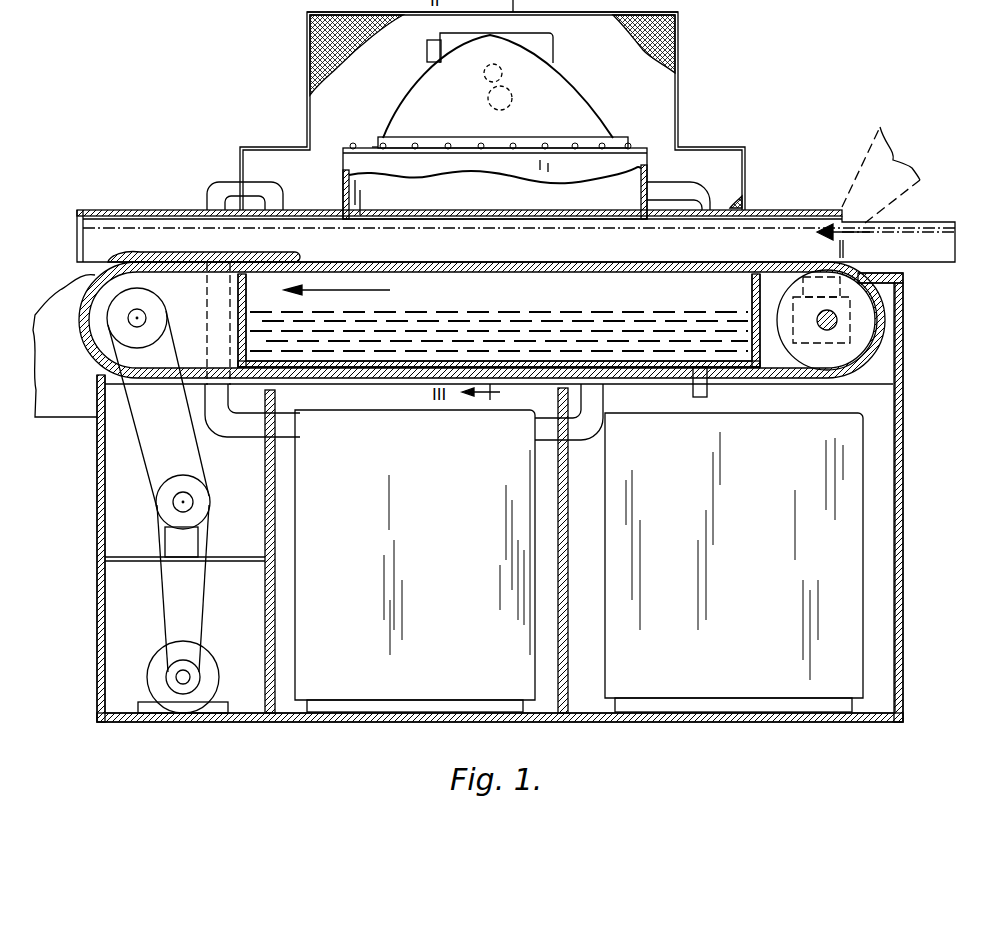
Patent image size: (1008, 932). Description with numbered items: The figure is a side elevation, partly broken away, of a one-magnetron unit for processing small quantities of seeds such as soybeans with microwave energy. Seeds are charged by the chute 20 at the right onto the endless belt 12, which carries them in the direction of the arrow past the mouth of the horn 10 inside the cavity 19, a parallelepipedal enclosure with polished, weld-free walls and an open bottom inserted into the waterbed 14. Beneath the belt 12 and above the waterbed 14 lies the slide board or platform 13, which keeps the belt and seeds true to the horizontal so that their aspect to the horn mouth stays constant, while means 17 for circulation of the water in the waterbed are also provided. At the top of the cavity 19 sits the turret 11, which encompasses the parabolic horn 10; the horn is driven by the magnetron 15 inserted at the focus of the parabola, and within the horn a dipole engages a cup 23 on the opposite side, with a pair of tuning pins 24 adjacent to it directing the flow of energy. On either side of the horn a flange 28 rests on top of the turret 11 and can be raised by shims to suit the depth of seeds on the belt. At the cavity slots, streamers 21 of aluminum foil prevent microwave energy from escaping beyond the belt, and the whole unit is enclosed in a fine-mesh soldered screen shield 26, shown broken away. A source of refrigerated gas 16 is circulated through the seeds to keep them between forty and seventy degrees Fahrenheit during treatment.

The horn 10 is at (580, 89).
The turret 11 is at (650, 165).
The endless belt 12 is at (822, 378).
The slide board or platform 13 is at (768, 265).
The waterbed 14 is at (752, 295).
The magnetron 15 is at (556, 50).
The source of refrigerated gas 16 is at (415, 561).
The means for circulation of the water 17 is at (734, 562).
The cavity 19 is at (645, 100).
The chute 20 is at (876, 133).
The streamers 21 is at (247, 240).
The cup 23 is at (505, 74).
The tuning pins 24 is at (508, 104).
The shield 26 is at (683, 17).
The flange 28 is at (372, 148).